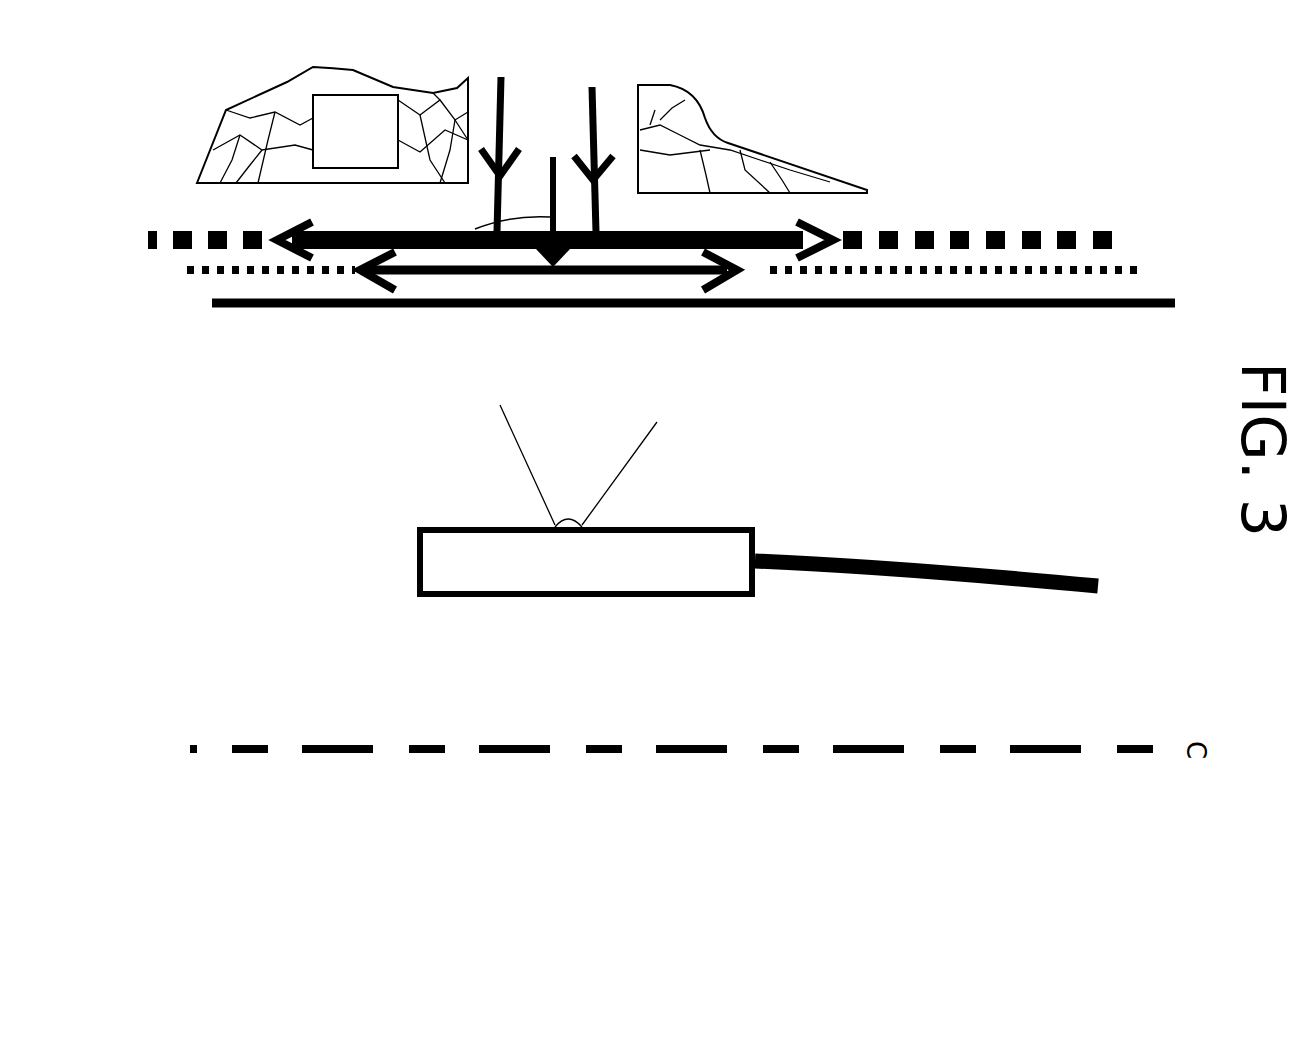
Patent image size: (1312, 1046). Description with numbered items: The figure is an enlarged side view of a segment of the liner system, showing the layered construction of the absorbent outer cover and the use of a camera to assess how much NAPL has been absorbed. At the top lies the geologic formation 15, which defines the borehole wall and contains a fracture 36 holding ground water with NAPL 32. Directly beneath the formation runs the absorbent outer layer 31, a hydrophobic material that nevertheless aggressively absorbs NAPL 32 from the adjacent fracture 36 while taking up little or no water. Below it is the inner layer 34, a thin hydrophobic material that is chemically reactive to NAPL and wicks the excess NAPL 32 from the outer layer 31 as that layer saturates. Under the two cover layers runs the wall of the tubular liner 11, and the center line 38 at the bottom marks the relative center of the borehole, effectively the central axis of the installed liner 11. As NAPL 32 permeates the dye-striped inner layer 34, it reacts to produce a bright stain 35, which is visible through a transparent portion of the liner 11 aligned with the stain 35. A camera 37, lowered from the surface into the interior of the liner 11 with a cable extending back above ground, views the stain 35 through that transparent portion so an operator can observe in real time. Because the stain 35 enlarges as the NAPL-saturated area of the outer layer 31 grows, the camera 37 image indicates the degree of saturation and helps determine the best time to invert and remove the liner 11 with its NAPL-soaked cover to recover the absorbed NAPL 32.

The tubular liner 11 is at (910, 305).
The geologic formation 15 is at (332, 125).
The absorbent outer layer 31 is at (1066, 250).
The NAPL 32 is at (442, 249).
The inner layer 34 is at (1007, 272).
The bright stain 35 is at (670, 274).
The fracture 36 is at (568, 100).
The camera 37 is at (712, 565).
The center line 38 is at (952, 753).